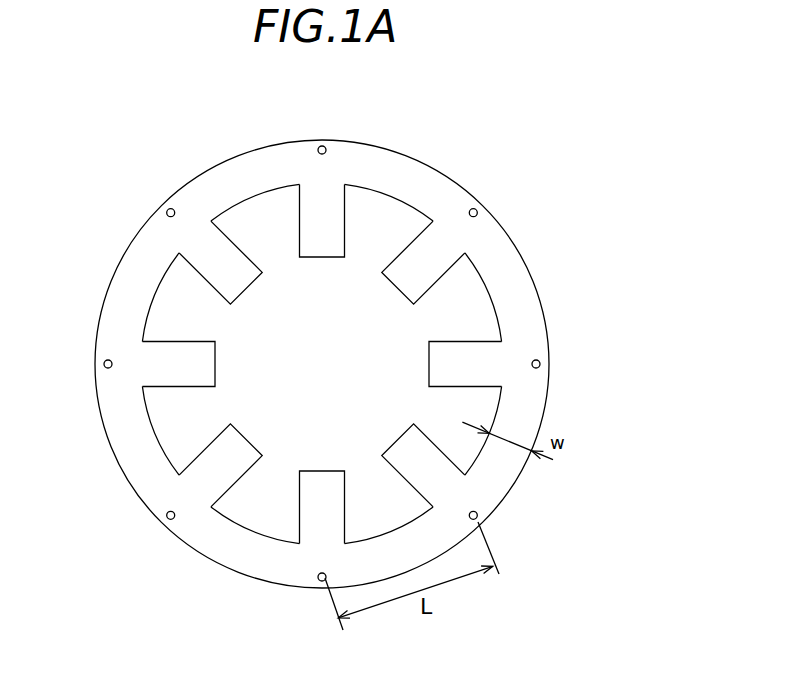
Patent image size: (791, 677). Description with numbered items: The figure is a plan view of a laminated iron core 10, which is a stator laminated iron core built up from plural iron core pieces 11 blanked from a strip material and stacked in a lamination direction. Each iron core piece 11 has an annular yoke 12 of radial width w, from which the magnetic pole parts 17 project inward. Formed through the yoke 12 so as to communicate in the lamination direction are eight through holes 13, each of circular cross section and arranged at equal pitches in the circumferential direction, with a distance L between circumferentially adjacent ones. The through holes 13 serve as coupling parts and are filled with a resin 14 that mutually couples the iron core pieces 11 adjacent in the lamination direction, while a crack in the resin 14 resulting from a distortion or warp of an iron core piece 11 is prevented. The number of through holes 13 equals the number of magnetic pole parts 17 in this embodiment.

The laminated iron core 10 is at (440, 152).
The iron core piece 11 is at (457, 175).
The yoke 12 is at (520, 283).
The through hole 13 is at (541, 364).
The resin 14 is at (478, 210).
The magnetic pole part 17 is at (235, 277).